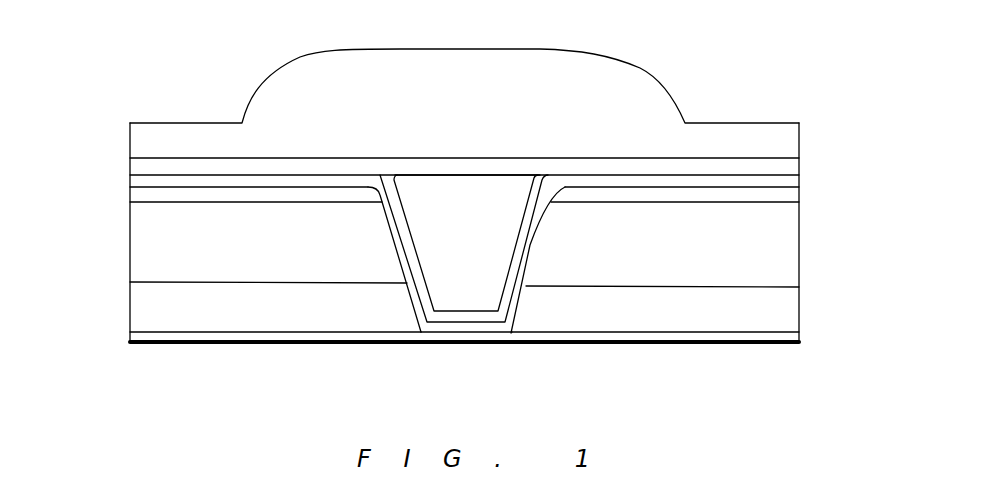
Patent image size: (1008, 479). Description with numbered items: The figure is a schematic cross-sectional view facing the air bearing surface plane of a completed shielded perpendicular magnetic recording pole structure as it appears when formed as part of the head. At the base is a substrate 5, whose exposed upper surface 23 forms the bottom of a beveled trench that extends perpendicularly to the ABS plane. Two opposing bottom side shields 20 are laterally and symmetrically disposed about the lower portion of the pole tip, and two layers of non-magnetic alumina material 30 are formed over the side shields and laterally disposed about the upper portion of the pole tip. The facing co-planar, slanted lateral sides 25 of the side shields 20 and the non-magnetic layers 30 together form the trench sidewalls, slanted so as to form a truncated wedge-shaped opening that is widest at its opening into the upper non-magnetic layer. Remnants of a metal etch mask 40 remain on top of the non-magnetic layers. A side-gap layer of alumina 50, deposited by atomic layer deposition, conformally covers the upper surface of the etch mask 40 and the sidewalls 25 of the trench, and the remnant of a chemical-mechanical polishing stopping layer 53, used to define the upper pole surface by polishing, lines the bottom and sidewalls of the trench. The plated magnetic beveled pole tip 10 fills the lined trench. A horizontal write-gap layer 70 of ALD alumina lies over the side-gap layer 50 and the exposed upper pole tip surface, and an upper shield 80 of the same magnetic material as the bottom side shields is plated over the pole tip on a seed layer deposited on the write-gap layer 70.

The substrate 5 is at (140, 335).
The beveled pole tip 10 is at (457, 270).
The bottom side shields 20 is at (147, 302).
The exposed upper surface of the substrate 23 is at (467, 332).
The slanted lateral sides 25 is at (398, 258).
The layers of non-magnetic material 30 is at (147, 240).
The metal etch mask 40 is at (147, 193).
The side-gap layer of alumina 50 is at (782, 180).
The CMP stopping layer 53 is at (403, 232).
The write-gap layer 70 is at (147, 165).
The upper shield 80 is at (618, 88).